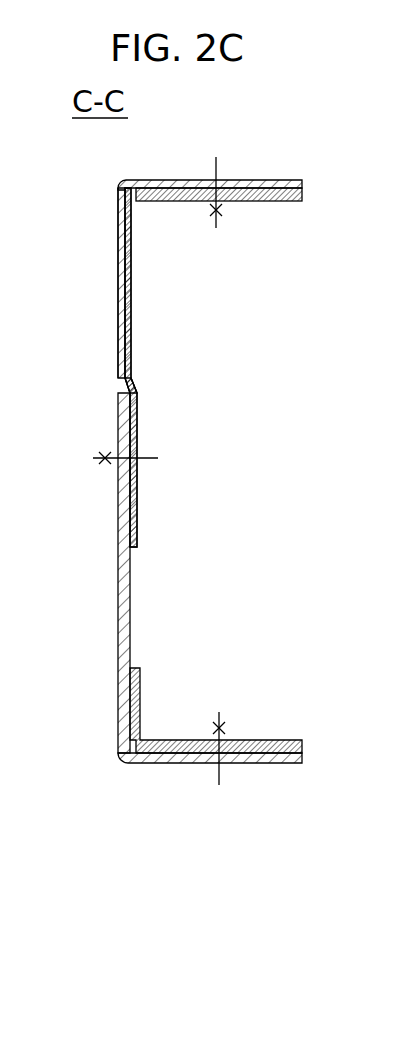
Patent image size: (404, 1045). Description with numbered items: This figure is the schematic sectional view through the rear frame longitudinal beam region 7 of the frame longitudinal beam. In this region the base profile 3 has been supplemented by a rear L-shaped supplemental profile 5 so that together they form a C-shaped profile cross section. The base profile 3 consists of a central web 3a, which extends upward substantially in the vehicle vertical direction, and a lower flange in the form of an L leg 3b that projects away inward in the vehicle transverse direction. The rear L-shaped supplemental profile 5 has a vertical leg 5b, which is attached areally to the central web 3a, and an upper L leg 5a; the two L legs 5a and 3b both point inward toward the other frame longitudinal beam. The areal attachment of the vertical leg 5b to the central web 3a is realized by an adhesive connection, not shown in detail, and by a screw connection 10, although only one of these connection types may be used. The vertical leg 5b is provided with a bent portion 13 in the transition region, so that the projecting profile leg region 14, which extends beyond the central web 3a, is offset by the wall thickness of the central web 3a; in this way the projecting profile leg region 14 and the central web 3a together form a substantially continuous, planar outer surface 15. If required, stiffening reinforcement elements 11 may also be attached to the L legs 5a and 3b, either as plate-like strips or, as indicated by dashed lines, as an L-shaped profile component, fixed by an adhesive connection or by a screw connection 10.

The base profile 3 is at (222, 612).
The central web 3a is at (129, 620).
The L leg 3b is at (288, 765).
The rear L-shaped supplemental profile 5 is at (202, 250).
The L leg 5a is at (264, 181).
The vertical leg 5b is at (118, 277).
The rear frame longitudinal beam region 7 is at (282, 502).
The screw connection 10 is at (218, 225).
The reinforcement element 11 is at (284, 203).
The bent portion 13 is at (134, 384).
The projecting profile leg region 14 is at (131, 328).
The planar outer surface 15 is at (118, 363).